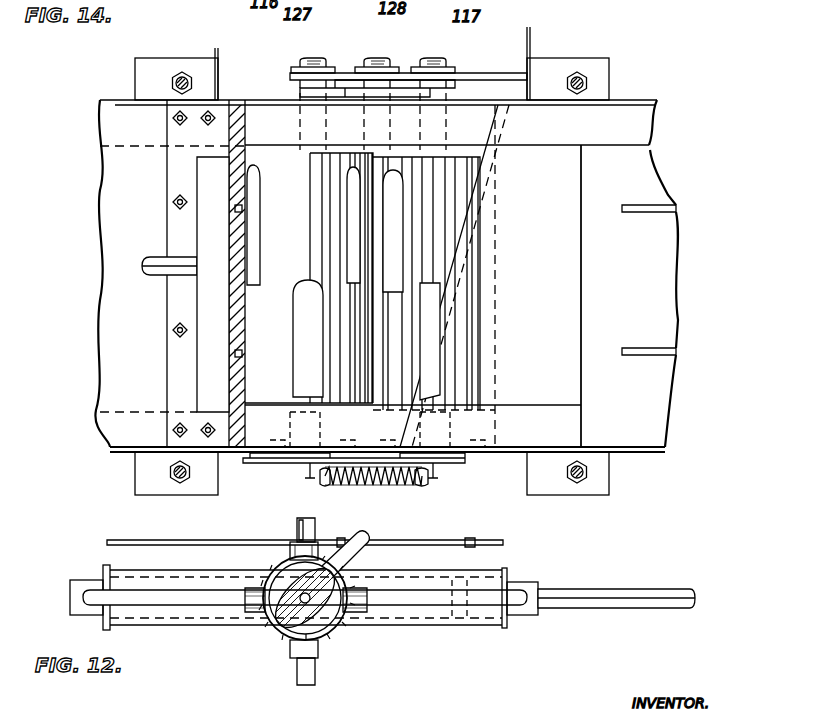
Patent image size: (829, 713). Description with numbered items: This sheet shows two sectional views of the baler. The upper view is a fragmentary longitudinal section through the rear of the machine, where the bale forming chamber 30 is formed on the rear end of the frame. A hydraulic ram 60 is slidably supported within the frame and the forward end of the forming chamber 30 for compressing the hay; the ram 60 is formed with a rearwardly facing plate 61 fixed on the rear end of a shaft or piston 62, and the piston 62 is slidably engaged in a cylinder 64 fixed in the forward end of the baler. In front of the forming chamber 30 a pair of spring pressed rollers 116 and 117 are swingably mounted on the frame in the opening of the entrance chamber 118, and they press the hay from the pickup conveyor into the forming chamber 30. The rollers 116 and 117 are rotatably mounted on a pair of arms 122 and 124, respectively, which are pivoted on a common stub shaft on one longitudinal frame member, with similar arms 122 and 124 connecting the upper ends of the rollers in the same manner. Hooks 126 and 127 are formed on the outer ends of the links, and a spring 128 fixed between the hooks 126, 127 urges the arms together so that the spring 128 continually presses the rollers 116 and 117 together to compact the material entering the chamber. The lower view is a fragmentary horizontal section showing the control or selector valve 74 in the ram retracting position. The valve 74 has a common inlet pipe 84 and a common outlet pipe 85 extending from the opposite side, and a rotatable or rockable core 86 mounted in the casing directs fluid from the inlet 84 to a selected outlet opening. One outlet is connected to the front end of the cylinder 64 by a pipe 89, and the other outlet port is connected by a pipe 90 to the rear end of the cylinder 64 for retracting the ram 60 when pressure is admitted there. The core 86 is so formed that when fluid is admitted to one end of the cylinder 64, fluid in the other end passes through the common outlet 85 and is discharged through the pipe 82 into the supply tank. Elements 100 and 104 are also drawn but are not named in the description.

In FIG. 14, the bale forming chamber 30 is at (603, 152).
In FIG. 14, the hydraulic ram 60 is at (153, 250).
In FIG. 12, the hydraulic ram 60 is at (548, 589).
In FIG. 14, the rearwardly facing plate 61 is at (233, 277).
In FIG. 14, the shaft or piston 62 is at (160, 277).
In FIG. 12, the shaft or piston 62 is at (590, 600).
In FIG. 14, the spring pressed roller 116 is at (420, 150).
In FIG. 14, the spring pressed roller 117 is at (278, 150).
In FIG. 14, the entrance chamber 118 is at (425, 352).
In FIG. 14, the arm 122 is at (403, 79).
In FIG. 14, the arm 124 is at (338, 73).
In FIG. 14, the hook 126 is at (432, 473).
In FIG. 14, the hook 127 is at (312, 479).
In FIG. 14, the spring 128 is at (398, 486).
In FIG. 12, the cylinder 64 is at (523, 612).
In FIG. 12, the selector valve 74 is at (345, 630).
In FIG. 12, the pipe 82 is at (312, 683).
In FIG. 12, the common inlet pipe 84 is at (312, 524).
In FIG. 12, the common outlet pipe 85 is at (300, 552).
In FIG. 12, the rockable core 86 is at (285, 618).
In FIG. 12, the pipe 89 is at (480, 604).
In FIG. 12, the pipe 90 is at (203, 600).
In FIG. 12, the rod 100 is at (250, 540).
In FIG. 12, the handle 104 is at (365, 552).